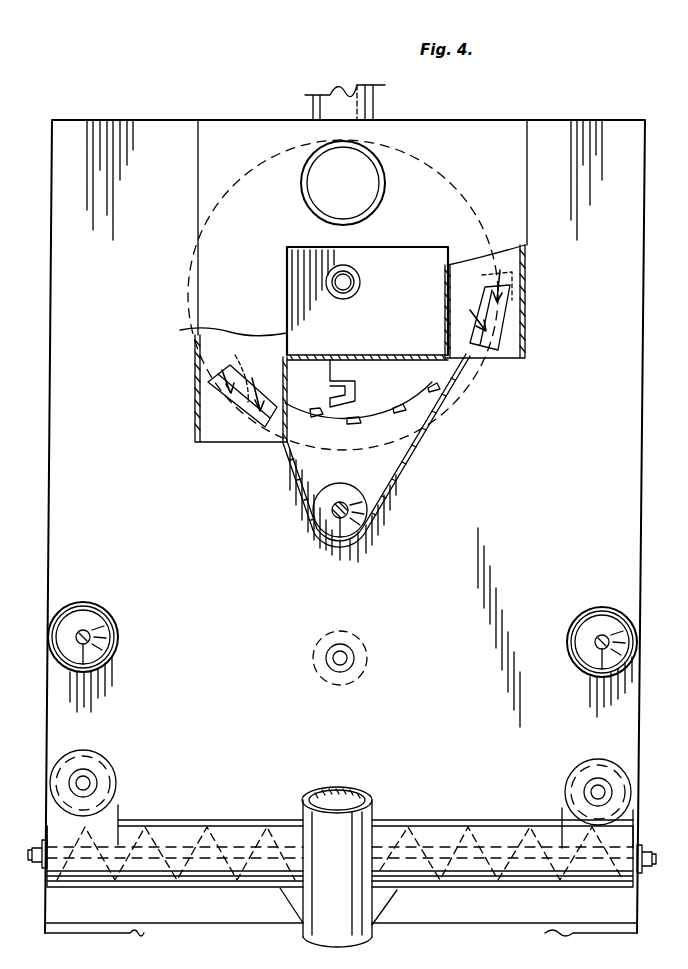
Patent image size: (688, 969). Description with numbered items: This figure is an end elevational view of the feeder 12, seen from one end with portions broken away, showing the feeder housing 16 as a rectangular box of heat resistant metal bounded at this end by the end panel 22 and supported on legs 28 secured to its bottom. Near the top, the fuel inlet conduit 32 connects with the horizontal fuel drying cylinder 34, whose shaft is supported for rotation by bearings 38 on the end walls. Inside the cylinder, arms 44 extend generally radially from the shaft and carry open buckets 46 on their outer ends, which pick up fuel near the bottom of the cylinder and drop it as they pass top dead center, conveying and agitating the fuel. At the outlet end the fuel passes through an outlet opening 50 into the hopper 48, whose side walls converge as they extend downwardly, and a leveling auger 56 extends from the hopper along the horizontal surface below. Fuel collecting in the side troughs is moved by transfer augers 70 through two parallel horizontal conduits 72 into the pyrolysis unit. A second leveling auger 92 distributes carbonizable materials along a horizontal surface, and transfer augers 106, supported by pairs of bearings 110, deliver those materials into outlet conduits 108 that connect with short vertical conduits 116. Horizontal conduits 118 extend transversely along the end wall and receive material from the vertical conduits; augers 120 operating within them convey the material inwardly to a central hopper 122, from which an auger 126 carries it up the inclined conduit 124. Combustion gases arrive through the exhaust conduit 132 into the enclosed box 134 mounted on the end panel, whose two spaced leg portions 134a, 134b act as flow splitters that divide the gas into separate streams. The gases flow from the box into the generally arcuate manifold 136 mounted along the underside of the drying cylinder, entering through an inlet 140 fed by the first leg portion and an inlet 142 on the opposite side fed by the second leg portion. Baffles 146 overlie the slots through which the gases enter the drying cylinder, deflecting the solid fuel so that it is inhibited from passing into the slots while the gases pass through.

The feeder 12 is at (109, 72).
The feeder housing 16 is at (181, 112).
The end panel 22 is at (628, 513).
The legs 28 is at (140, 933).
The fuel inlet conduit 32 is at (378, 100).
The fuel drying cylinder 34 is at (228, 193).
The bearings 38 is at (356, 278).
The arms 44 is at (358, 377).
The open buckets 46 is at (330, 398).
The hopper 48 is at (405, 455).
The outlet opening 50 is at (304, 362).
The leveling auger 56 is at (320, 522).
The transfer auger 70 is at (99, 633).
The horizontal conduit 72 is at (80, 603).
The leveling auger 92 is at (362, 651).
The transfer auger 106 is at (76, 750).
The outlet conduit 108 is at (115, 773).
The bearings 110 is at (92, 776).
The vertical conduit 116 is at (62, 822).
The horizontal conduit 118 is at (170, 822).
The auger 120 is at (222, 830).
The central hopper 122 is at (292, 897).
The inclined conduit 124 is at (376, 812).
The auger 126 is at (348, 800).
The exhaust conduit 132 is at (386, 190).
The enclosed box 134 is at (510, 187).
The leg portion 134a is at (185, 331).
The leg portion 134b is at (527, 347).
The arcuate manifold 136 is at (473, 400).
The inlet 140 is at (250, 415).
The inlet 142 is at (496, 318).
The baffle 146 is at (400, 410).